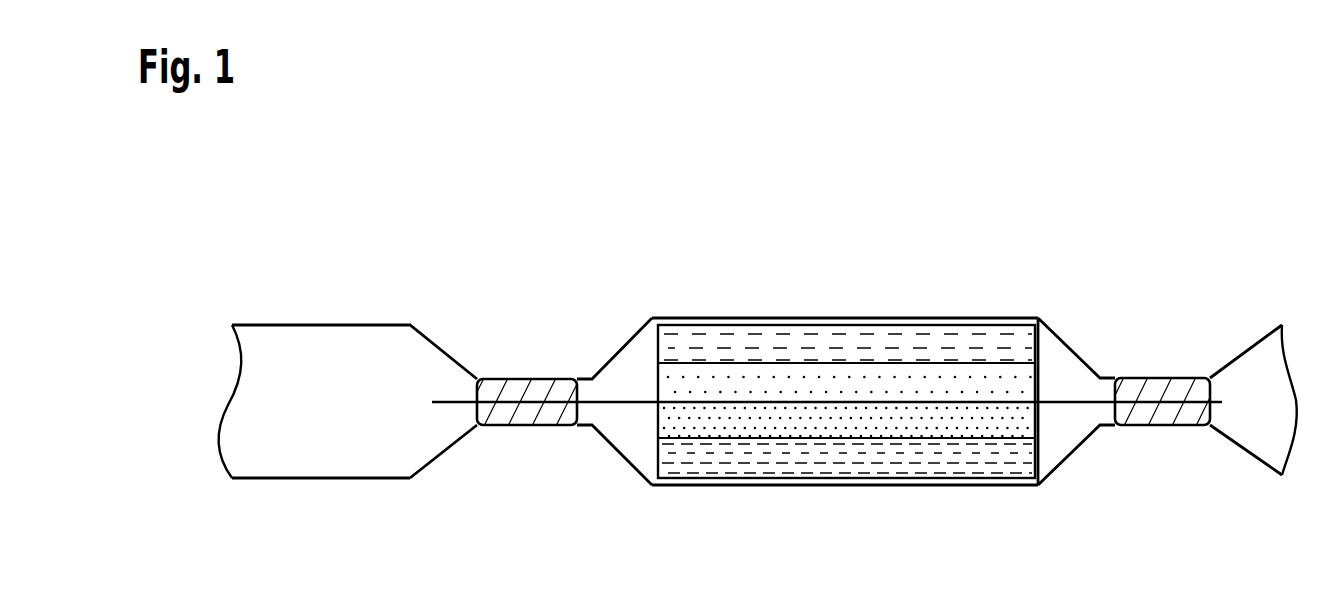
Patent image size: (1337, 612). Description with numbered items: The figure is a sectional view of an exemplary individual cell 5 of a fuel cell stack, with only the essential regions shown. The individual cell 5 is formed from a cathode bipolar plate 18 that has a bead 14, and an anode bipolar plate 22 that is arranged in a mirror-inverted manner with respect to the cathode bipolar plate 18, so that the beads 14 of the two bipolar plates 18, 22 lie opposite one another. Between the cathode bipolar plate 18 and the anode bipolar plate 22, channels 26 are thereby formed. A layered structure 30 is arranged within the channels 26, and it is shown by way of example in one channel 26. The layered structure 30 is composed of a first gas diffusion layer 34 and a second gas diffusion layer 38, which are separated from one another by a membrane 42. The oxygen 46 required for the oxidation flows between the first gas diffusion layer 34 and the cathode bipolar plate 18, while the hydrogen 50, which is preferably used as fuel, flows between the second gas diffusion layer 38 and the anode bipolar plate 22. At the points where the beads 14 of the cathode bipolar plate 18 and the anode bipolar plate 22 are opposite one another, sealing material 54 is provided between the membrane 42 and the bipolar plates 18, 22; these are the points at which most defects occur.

The individual cell 5 is at (1164, 159).
The bead 14 is at (592, 357).
The cathode bipolar plate 18 is at (752, 318).
The anode bipolar plate 22 is at (322, 478).
The channels 26 is at (634, 362).
The layered structure 30 is at (909, 314).
The first gas diffusion layer 34 is at (1017, 385).
The second gas diffusion layer 38 is at (1017, 420).
The membrane 42 is at (1102, 398).
The oxygen 46 is at (1015, 342).
The hydrogen 50 is at (1017, 458).
The sealing material 54 is at (1163, 413).